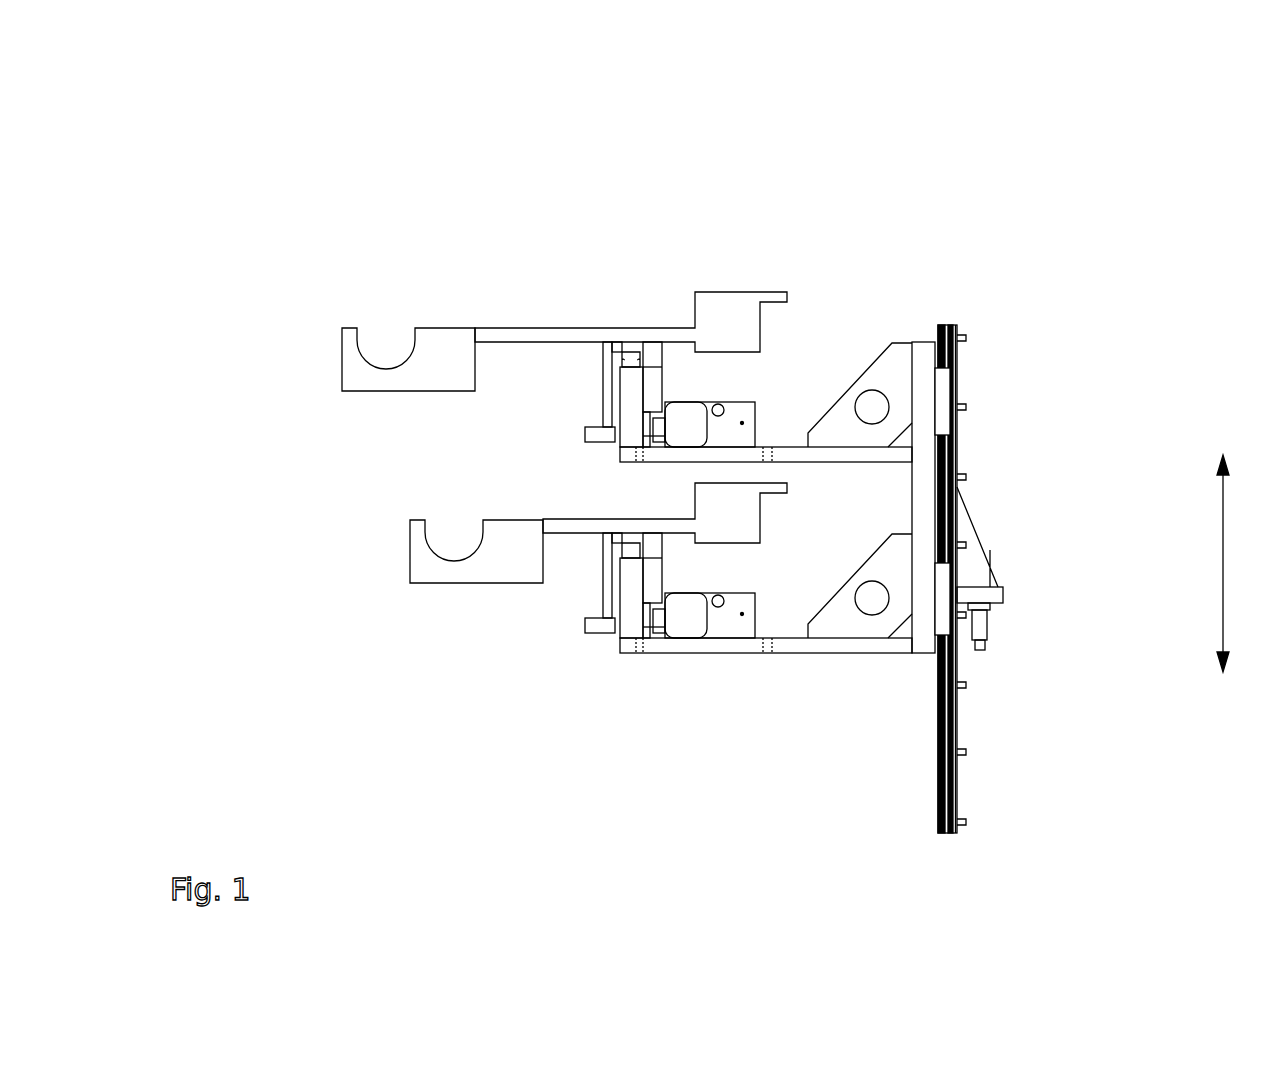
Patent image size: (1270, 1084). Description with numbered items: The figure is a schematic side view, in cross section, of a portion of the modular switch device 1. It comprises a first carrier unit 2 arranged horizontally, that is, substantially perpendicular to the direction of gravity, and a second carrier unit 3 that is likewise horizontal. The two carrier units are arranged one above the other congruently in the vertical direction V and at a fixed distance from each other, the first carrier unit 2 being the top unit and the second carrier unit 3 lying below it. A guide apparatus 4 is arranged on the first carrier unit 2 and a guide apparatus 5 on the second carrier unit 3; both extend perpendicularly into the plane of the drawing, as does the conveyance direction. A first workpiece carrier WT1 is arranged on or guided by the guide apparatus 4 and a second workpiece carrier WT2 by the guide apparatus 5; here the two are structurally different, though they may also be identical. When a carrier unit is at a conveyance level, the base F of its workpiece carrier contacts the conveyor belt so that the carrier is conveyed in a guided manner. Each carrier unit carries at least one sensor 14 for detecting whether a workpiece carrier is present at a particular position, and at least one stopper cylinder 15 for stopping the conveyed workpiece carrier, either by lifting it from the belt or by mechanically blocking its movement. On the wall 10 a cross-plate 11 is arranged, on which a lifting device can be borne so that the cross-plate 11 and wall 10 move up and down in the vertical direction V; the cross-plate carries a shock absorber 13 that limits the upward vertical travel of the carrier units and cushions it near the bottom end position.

The switch device 1 is at (688, 216).
The first carrier unit 2 is at (783, 453).
The second carrier unit 3 is at (790, 645).
The guide apparatus 4 is at (628, 397).
The guide apparatus 5 is at (635, 597).
The wall 10 is at (942, 290).
The cross-plate 11 is at (985, 597).
The shock absorber 13 is at (992, 635).
The sensor 14 is at (657, 438).
The stopper cylinder 15 is at (750, 415).
The first workpiece carrier WT1 is at (350, 320).
The second workpiece carrier WT2 is at (383, 547).
The base F is at (585, 433).
The vertical direction V is at (1223, 588).